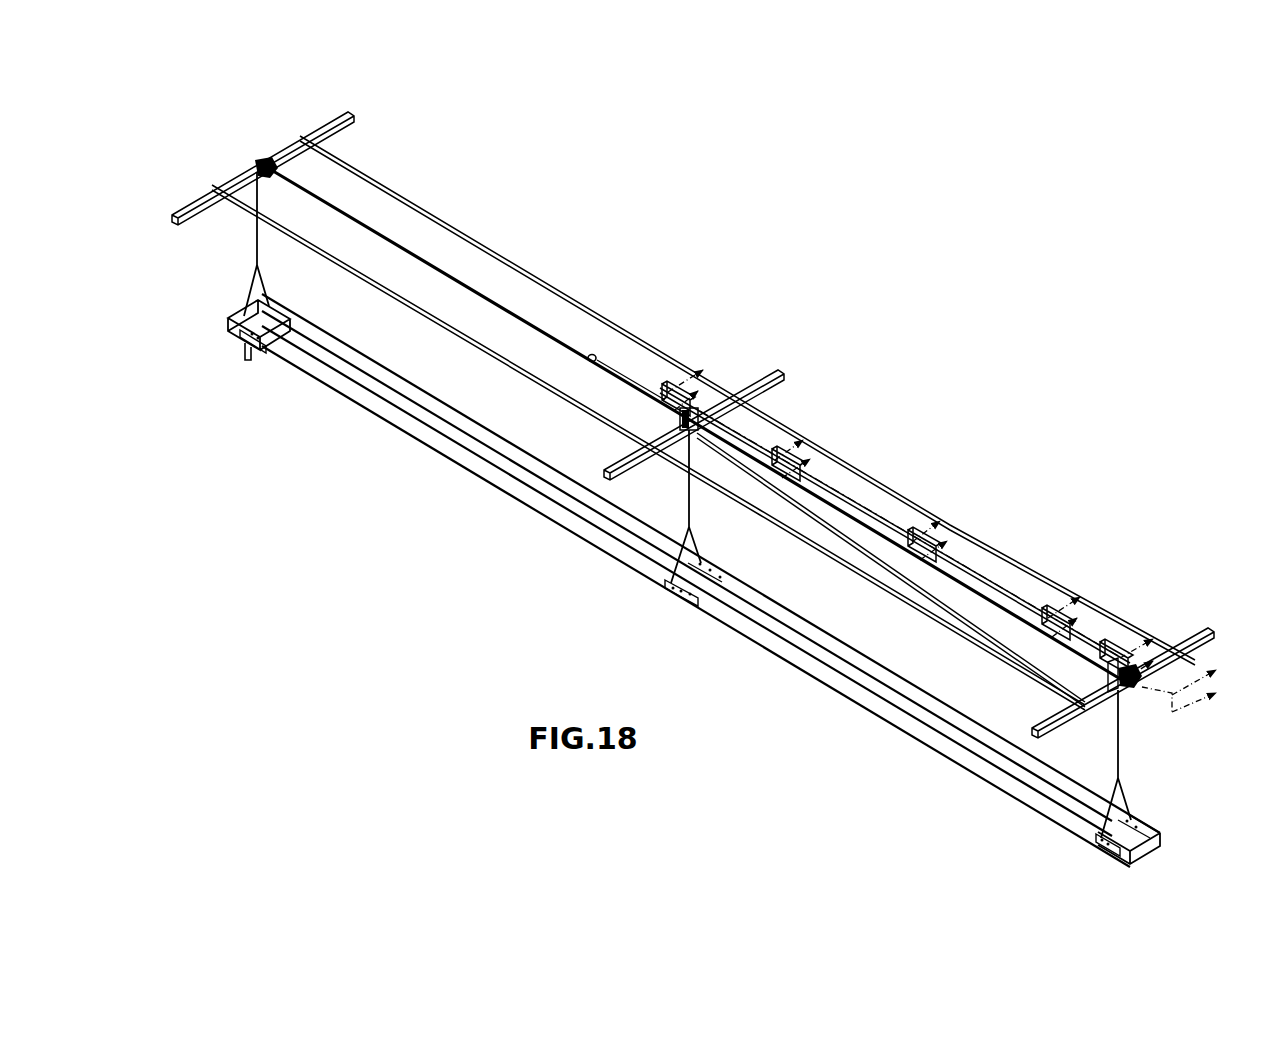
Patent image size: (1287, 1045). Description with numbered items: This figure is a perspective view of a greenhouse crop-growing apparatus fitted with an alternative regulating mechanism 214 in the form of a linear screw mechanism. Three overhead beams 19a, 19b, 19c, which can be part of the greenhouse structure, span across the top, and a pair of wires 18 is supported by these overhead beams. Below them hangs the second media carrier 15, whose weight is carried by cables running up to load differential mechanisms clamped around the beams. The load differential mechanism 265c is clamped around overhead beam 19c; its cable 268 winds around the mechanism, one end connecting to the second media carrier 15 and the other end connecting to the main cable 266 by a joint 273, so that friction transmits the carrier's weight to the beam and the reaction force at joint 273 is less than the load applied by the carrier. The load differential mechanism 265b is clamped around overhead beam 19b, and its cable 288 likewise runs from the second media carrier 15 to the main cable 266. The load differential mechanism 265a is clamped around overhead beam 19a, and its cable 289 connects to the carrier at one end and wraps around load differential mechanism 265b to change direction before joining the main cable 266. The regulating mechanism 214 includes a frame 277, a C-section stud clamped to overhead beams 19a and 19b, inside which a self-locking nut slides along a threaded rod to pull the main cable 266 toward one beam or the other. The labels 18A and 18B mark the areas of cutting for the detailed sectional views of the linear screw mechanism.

The second media carrier 15 is at (497, 507).
The wires 18 is at (512, 260).
The detail view area 18A is at (1087, 605).
The detail view area 18B is at (764, 415).
The overhead beam 19a is at (1195, 630).
The overhead beam 19b is at (783, 378).
The overhead beam 19c is at (355, 123).
The regulating mechanism 214 is at (848, 476).
The load differential mechanism 265a is at (1145, 698).
The load differential mechanism 265b is at (708, 440).
The load differential mechanism 265c is at (262, 152).
The main cable 266 is at (663, 400).
The cable 268 is at (323, 197).
The joint 273 is at (597, 357).
The frame 277 is at (878, 518).
The cable 288 is at (688, 488).
The cable 289 is at (1120, 745).